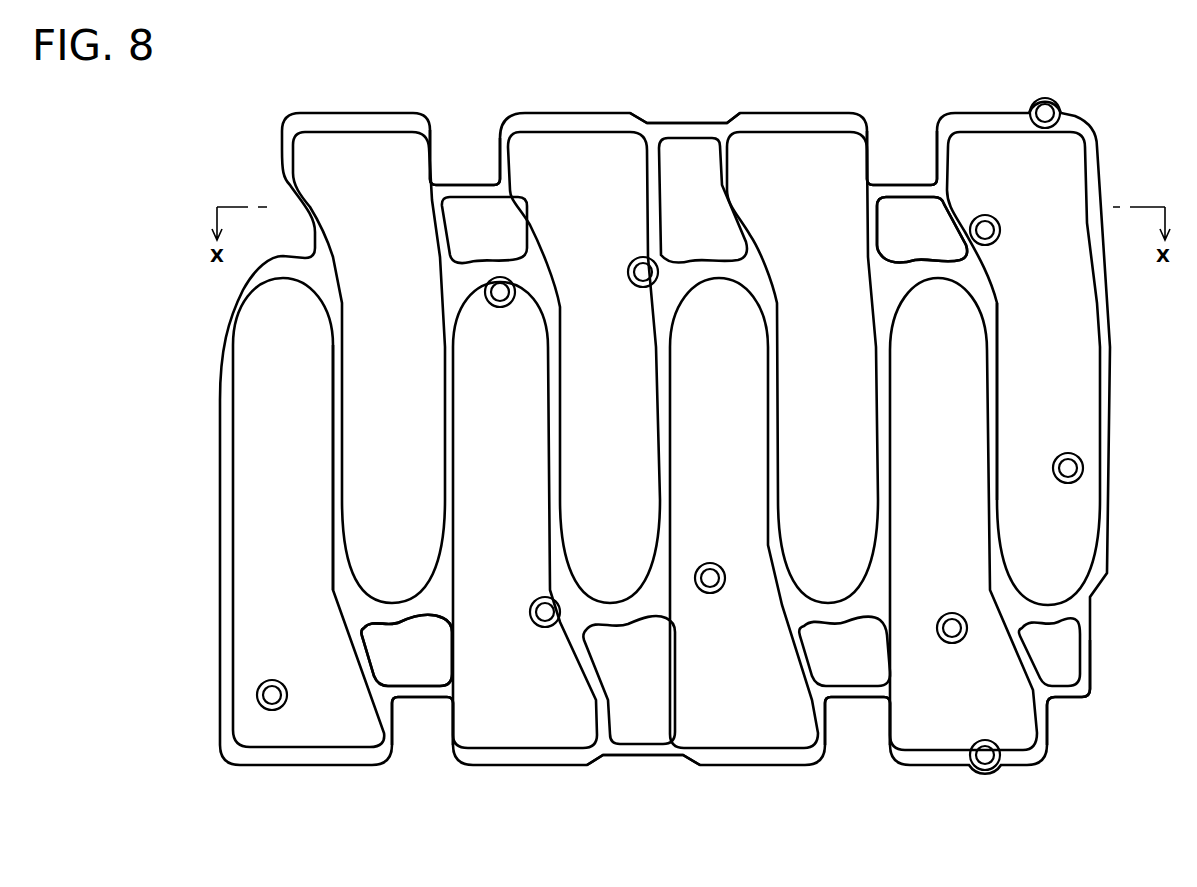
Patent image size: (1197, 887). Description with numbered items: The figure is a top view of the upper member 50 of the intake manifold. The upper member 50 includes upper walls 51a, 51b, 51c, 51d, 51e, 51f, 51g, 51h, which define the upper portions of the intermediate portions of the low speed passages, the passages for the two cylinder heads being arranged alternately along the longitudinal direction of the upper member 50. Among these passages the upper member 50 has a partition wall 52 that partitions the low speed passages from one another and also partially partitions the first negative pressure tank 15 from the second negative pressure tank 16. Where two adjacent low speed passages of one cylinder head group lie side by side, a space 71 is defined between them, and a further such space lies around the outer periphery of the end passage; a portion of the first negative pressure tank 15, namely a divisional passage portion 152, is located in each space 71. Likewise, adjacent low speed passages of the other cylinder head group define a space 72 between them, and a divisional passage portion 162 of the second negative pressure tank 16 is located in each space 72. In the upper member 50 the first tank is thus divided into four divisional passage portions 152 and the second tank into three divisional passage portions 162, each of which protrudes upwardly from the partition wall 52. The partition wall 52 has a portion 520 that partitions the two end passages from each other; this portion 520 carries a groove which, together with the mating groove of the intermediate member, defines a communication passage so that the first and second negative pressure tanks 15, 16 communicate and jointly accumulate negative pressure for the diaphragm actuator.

The upper member 50 is at (1083, 122).
The upper wall 51a is at (325, 707).
The upper wall 51b is at (540, 707).
The upper wall 51c is at (768, 707).
The upper wall 51d is at (1010, 707).
The upper wall 51e is at (353, 167).
The upper wall 51f is at (570, 167).
The upper wall 51g is at (793, 167).
The upper wall 51h is at (995, 167).
The partition wall 52 is at (333, 318).
The portion of the partition wall 520 is at (997, 398).
The space 71 is at (412, 718).
The space 72 is at (488, 152).
The divisional passage portion 152 is at (417, 662).
The divisional passage portion 162 is at (462, 220).
The first negative pressure tank 15 is at (370, 643).
The second negative pressure tank 16 is at (959, 244).